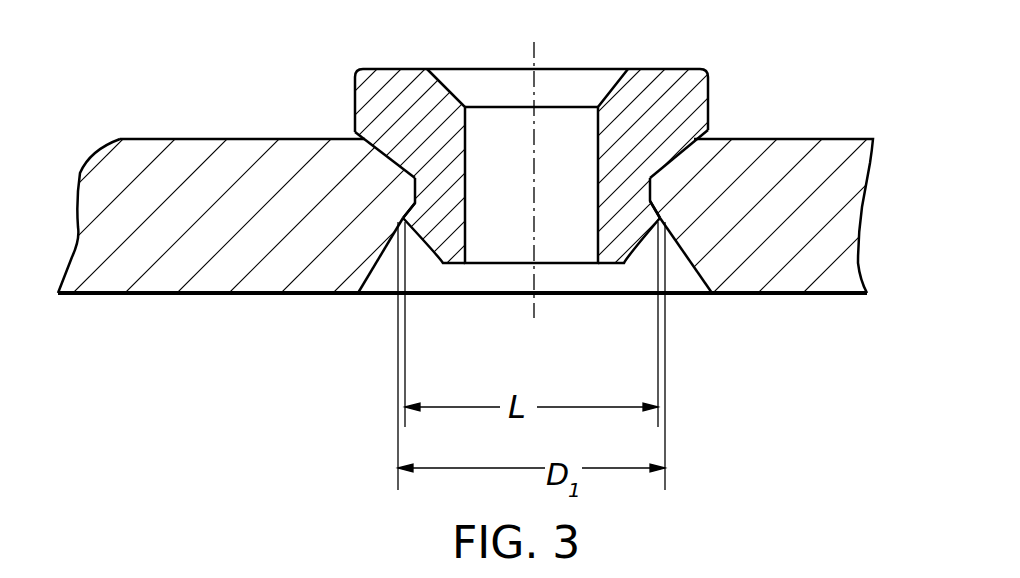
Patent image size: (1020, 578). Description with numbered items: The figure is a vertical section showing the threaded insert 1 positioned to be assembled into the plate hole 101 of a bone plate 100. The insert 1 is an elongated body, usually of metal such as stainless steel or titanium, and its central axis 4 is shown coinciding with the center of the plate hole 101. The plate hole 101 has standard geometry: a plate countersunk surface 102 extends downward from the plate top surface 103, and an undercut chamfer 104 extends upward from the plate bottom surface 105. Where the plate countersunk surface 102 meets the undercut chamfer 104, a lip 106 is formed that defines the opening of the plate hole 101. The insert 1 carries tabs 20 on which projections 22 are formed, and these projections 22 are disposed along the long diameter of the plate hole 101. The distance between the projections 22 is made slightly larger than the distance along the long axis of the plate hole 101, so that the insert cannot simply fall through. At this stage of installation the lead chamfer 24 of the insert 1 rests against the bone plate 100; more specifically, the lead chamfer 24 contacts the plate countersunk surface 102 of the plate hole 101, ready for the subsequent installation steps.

The insert 1 is at (710, 72).
The central axis 4 is at (534, 53).
The tabs 20 is at (625, 233).
The projections 22 is at (662, 218).
The lead chamfer 24 is at (403, 222).
The plate 100 is at (792, 157).
The plate hole 101 is at (713, 136).
The plate countersunk surface 102 is at (368, 177).
The plate top surface 103 is at (205, 139).
The undercut chamfer 104 is at (383, 268).
The plate bottom surface 105 is at (218, 293).
The lip 106 is at (400, 223).